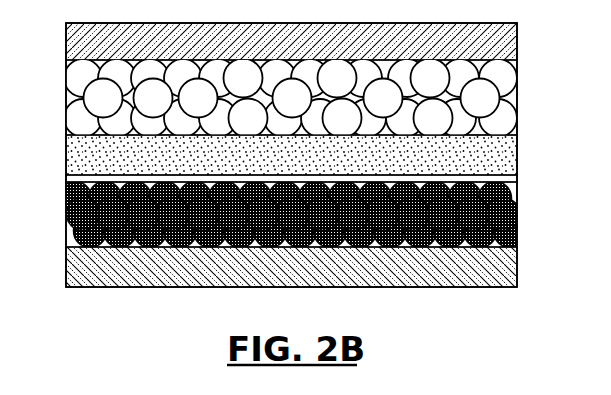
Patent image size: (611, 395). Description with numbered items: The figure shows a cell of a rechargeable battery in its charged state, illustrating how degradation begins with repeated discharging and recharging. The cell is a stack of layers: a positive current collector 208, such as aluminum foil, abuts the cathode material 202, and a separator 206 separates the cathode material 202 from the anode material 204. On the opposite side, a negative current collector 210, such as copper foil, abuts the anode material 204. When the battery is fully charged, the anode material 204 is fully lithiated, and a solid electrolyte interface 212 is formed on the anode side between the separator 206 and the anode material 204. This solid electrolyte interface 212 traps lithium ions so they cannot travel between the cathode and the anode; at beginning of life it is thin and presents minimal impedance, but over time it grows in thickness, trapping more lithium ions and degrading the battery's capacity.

The positive current collector 208 is at (510, 31).
The cathode material 202 is at (507, 117).
The separator 206 is at (517, 153).
The solid electrolyte interface 212 is at (517, 178).
The anode material 204 is at (517, 227).
The negative current collector 210 is at (517, 267).